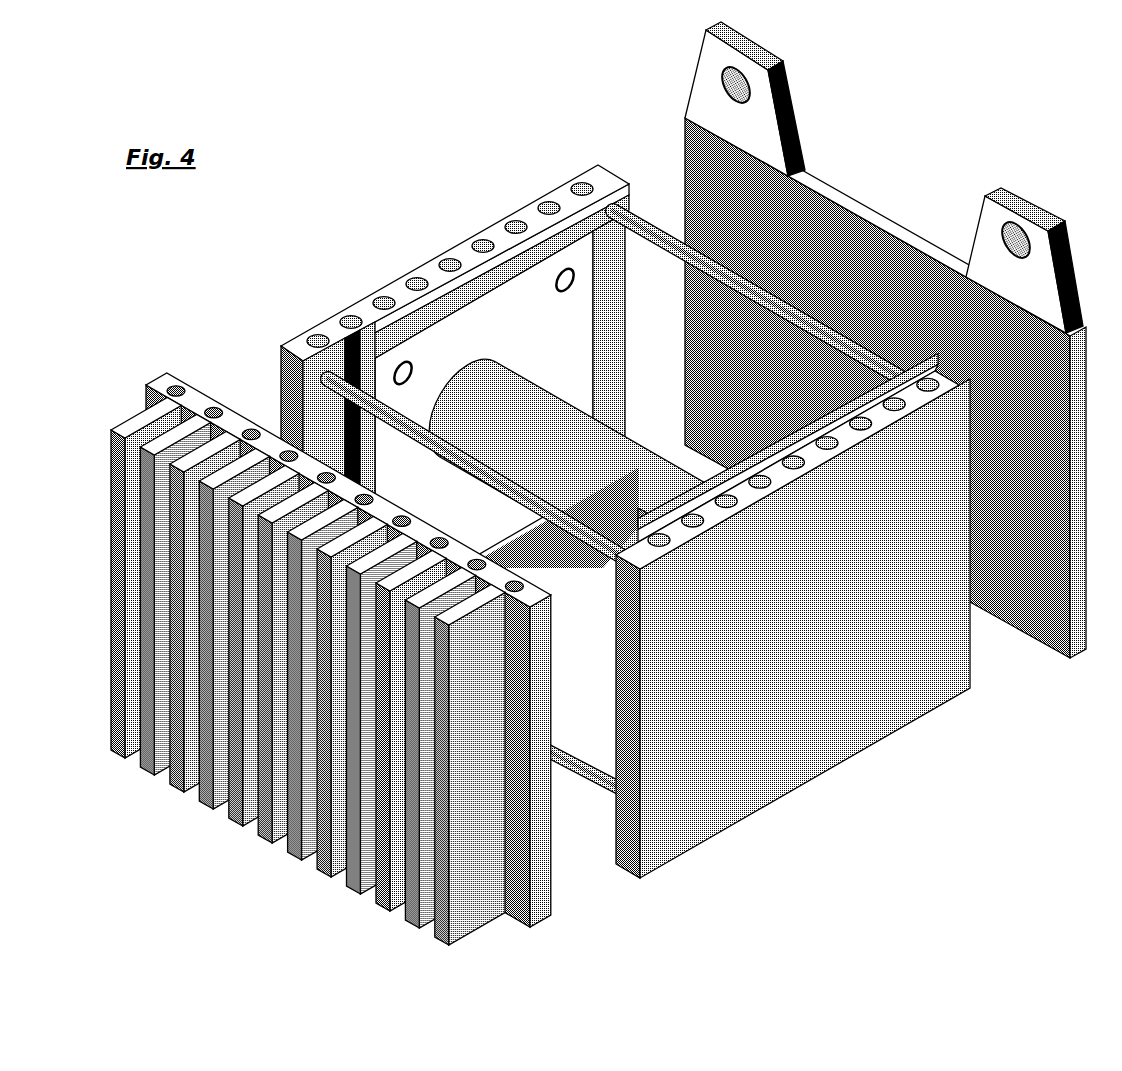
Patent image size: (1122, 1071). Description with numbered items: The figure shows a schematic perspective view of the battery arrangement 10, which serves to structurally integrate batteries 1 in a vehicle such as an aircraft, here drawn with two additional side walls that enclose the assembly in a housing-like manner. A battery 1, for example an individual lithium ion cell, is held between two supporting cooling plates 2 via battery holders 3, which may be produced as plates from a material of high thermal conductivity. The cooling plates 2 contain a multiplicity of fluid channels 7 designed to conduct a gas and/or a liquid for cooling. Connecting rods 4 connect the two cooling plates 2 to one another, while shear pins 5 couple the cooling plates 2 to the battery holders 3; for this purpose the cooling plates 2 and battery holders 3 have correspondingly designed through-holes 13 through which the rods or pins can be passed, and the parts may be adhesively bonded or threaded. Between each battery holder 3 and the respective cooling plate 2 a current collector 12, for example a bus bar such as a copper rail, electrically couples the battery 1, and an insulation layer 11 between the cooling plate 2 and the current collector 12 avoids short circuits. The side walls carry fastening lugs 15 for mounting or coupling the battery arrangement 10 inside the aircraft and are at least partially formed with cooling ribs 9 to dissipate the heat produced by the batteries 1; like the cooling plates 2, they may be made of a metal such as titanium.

The battery 1 is at (637, 442).
The cooling plate 2 is at (878, 712).
The battery holder 3 is at (587, 330).
The connecting rod 4 is at (620, 206).
The shear pin 5 is at (572, 272).
The fluid channel 7 is at (577, 173).
The cooling rib 9 is at (103, 478).
The battery arrangement 10 is at (346, 106).
The insulation layer 11 is at (362, 308).
The current collector 12 is at (430, 285).
The through-hole 13 is at (1010, 222).
The lug 15 is at (692, 58).